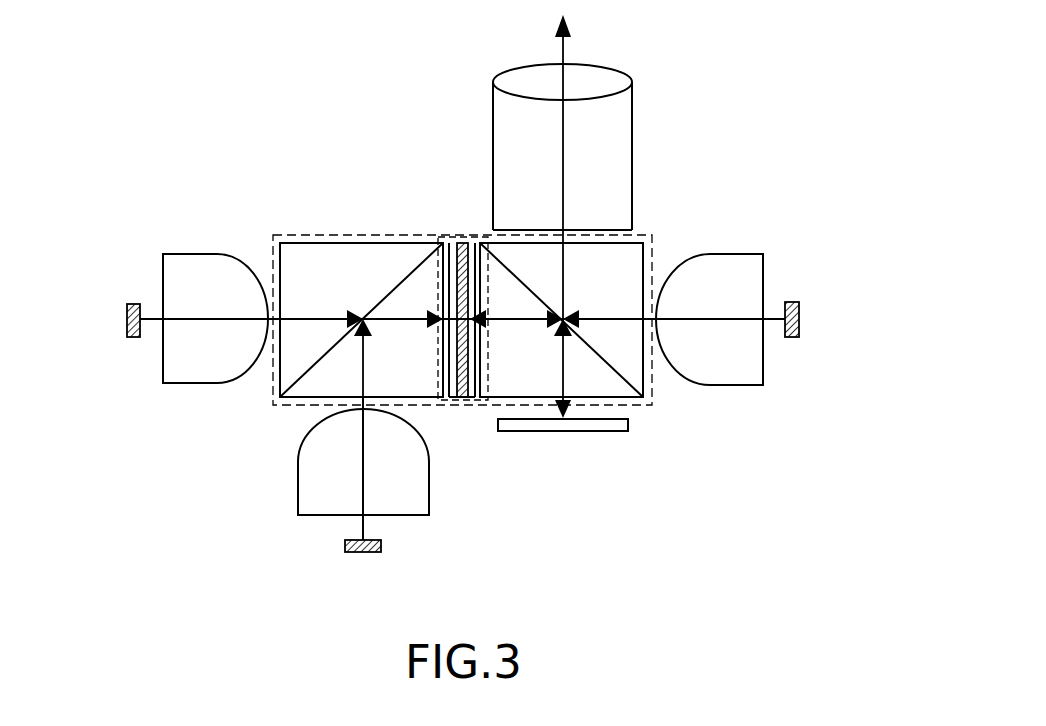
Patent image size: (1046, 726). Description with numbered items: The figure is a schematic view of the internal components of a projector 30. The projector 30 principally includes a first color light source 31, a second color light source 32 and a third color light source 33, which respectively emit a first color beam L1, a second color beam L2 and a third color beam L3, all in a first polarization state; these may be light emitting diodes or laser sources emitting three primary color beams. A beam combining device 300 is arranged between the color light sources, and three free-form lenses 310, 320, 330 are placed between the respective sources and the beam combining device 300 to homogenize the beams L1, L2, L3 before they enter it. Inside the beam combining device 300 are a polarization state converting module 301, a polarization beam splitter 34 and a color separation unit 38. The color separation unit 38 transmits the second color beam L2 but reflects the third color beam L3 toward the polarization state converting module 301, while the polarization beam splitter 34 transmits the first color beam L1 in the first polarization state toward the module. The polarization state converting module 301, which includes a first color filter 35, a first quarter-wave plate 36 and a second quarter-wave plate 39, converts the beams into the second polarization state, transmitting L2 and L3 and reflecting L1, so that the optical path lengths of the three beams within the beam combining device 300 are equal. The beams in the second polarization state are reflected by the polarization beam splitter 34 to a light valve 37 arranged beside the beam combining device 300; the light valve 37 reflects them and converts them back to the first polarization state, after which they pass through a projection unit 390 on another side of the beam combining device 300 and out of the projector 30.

The projector 30 is at (714, 47).
The beam combining device 300 is at (318, 232).
The polarization state converting module 301 is at (488, 375).
The free-form lens 310 is at (725, 268).
The free-form lens 320 is at (203, 268).
The free-form lens 330 is at (418, 480).
The projection unit 390 is at (508, 150).
The first color light source 31 is at (800, 310).
The second color light source 32 is at (125, 310).
The third color light source 33 is at (378, 550).
The polarization beam splitter 34 is at (652, 385).
The first color filter 35 is at (467, 396).
The first quarter-wave plate 36 is at (470, 242).
The light valve 37 is at (585, 425).
The color separation unit 38 is at (280, 385).
The second quarter-wave plate 39 is at (445, 240).
The first color beam L1 is at (773, 315).
The second color beam L2 is at (155, 317).
The third color beam L3 is at (358, 525).